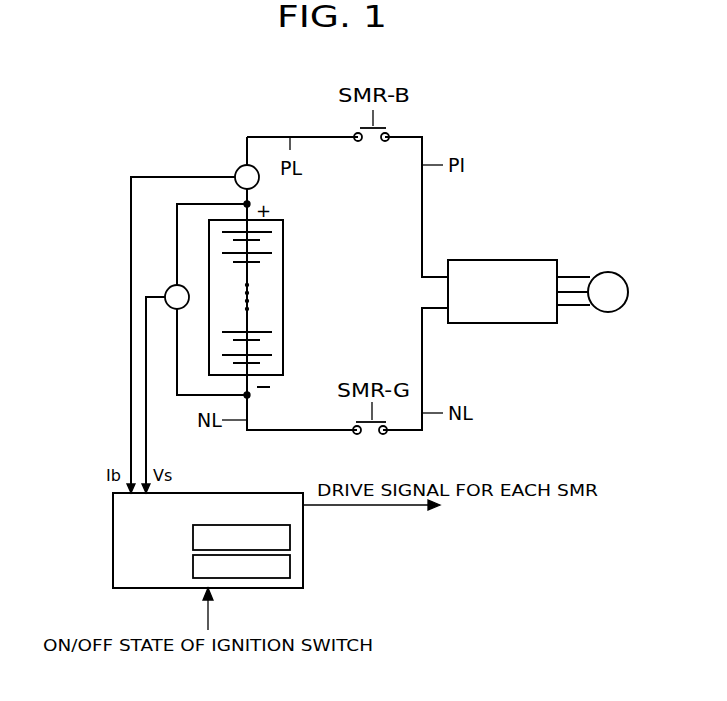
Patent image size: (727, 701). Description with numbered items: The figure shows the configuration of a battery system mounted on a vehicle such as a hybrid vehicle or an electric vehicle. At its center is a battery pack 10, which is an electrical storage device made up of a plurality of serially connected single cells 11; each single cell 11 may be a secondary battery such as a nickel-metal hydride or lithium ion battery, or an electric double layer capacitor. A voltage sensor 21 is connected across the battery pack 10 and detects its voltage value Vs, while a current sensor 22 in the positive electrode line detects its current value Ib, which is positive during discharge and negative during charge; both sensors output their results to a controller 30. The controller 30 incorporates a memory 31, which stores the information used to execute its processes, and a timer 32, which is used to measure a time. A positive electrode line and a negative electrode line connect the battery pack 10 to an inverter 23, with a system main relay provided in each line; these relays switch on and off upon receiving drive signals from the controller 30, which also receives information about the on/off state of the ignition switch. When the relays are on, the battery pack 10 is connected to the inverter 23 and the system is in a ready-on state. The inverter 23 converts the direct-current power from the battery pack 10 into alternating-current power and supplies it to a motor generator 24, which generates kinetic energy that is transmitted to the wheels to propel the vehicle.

The battery pack 10 is at (283, 293).
The single cell 11 is at (272, 236).
The voltage sensor 21 is at (170, 288).
The current sensor 22 is at (240, 167).
The inverter 23 is at (503, 323).
The motor generator 24 is at (608, 312).
The controller 30 is at (113, 540).
The memory 31 is at (290, 537).
The timer 32 is at (290, 567).